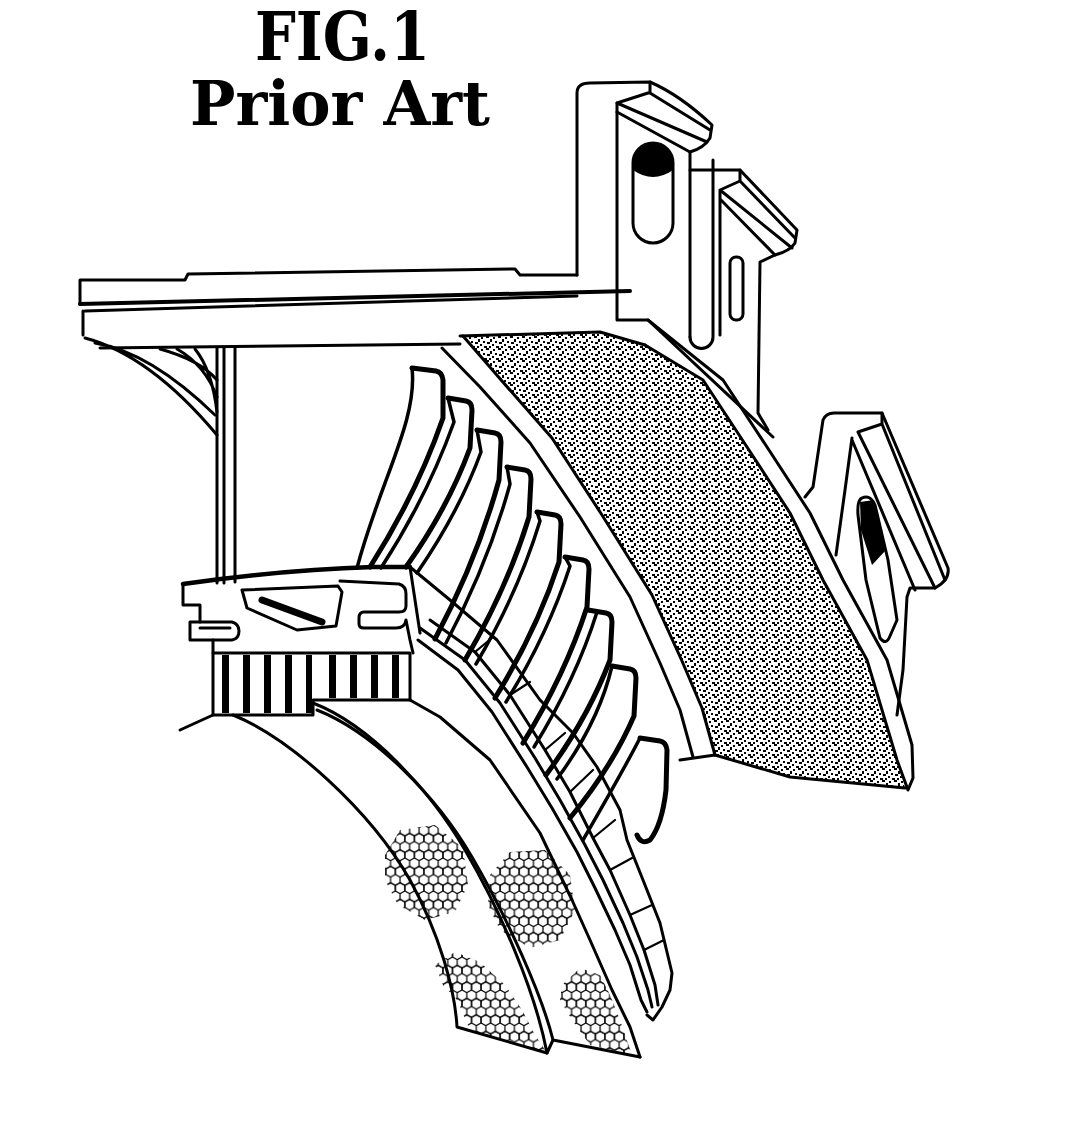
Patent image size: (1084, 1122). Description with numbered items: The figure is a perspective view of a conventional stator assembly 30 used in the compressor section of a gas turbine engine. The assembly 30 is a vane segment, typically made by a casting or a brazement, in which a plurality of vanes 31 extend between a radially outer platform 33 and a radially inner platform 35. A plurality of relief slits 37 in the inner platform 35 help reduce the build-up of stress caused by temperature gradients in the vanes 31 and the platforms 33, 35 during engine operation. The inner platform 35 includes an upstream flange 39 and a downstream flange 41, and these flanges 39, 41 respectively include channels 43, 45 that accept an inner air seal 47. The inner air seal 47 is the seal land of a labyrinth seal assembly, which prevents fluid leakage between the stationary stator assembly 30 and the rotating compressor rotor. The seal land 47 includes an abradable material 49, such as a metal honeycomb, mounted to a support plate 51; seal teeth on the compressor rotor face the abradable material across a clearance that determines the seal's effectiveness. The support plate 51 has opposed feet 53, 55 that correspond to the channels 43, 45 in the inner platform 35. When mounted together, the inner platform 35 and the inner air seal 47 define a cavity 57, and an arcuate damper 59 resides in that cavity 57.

The stator assembly 30 is at (213, 248).
The vanes 31 is at (330, 432).
The radially outer platform 33 is at (357, 290).
The radially inner platform 35 is at (285, 576).
The relief slits 37 is at (630, 862).
The upstream flange 39 is at (183, 610).
The downstream flange 41 is at (408, 463).
The channel 43 is at (187, 627).
The channel 45 is at (393, 668).
The inner air seal 47 is at (423, 907).
The abradable material 49 is at (440, 993).
The support plate 51 is at (255, 637).
The foot 53 is at (183, 611).
The foot 55 is at (384, 610).
The cavity 57 is at (288, 640).
The arcuate damper 59 is at (300, 578).